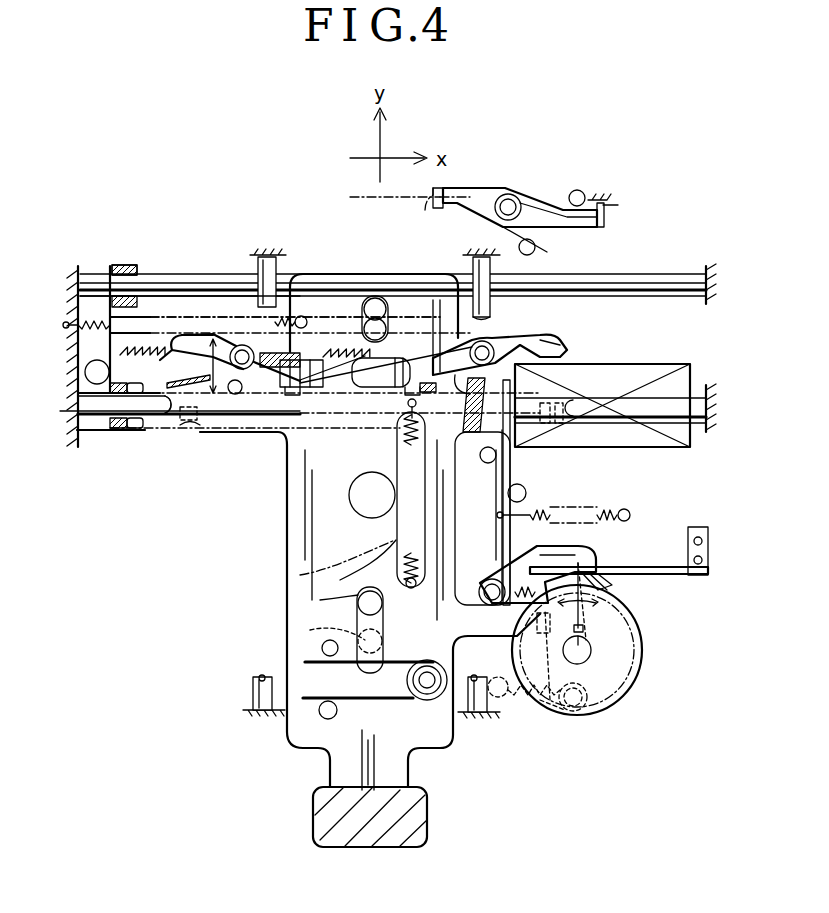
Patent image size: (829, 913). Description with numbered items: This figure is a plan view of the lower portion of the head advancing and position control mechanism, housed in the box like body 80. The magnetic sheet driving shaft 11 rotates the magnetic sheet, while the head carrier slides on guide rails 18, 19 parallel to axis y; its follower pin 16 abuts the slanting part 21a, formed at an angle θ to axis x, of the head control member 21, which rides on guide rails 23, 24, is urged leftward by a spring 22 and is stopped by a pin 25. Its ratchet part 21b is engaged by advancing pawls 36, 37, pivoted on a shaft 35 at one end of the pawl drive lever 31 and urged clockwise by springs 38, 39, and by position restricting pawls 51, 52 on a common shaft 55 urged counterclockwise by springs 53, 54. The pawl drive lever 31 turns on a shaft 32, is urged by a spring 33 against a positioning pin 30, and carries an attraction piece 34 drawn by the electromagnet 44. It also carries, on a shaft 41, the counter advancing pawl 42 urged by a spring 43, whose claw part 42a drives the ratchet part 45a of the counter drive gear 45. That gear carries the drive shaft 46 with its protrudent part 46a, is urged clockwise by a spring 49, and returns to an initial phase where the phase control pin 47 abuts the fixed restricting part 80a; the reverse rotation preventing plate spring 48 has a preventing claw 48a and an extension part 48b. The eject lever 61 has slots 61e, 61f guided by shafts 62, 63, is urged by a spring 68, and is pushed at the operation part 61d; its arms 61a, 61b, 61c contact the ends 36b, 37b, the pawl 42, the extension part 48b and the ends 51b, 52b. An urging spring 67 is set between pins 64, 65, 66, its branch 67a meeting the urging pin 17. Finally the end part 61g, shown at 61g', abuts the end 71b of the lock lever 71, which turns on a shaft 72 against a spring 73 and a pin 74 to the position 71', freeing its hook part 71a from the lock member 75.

The magnetic sheet driving shaft 11 is at (300, 575).
The follower pin 16 is at (382, 348).
The urging pin 17 is at (357, 643).
The guide rail 18 is at (258, 260).
The guide rail 19 is at (528, 252).
The head control member 21 is at (147, 343).
The slanting part 21a is at (350, 360).
The ratchet part 21b is at (125, 268).
The spring 22 is at (165, 325).
The guide rail 23 is at (185, 372).
The guide rail 24 is at (180, 286).
The pin 25 is at (85, 374).
The positioning pin 30 is at (548, 514).
The pawl drive lever 31 is at (520, 493).
The shaft 32 is at (494, 456).
The spring 33 is at (600, 510).
The attraction piece 34 is at (568, 392).
The shaft 35 is at (492, 343).
The advancing pawl 36 is at (400, 395).
The end of advancing pawl 36b is at (548, 354).
The advancing pawl 37 is at (353, 380).
The end of advancing pawl 37b is at (548, 348).
The spring 38 is at (350, 480).
The spring 39 is at (385, 430).
The shaft 41 is at (432, 750).
The counter advancing pawl 42 is at (594, 552).
The claw part 42a is at (618, 572).
The spring 43 is at (545, 547).
The electromagnet 44 is at (640, 448).
The counter drive gear 45 is at (620, 615).
The ratchet part 45a is at (555, 612).
The drive shaft 46 is at (590, 660).
The protrudent part 46a is at (593, 645).
The phase control pin 47 is at (585, 706).
The reverse rotation preventing plate spring 48 is at (688, 575).
The preventing claw 48a is at (612, 586).
The extension part 48b is at (540, 590).
The spring 49 is at (500, 697).
The position restricting pawl 51 is at (233, 394).
The end of position restricting pawl 51b is at (158, 408).
The position restricting pawl 52 is at (280, 412).
The end of position restricting pawl 52b is at (78, 418).
The spring 53 is at (280, 362).
The spring 54 is at (305, 365).
The common shaft 55 is at (235, 347).
The eject lever 61 is at (300, 565).
The arm 61a is at (585, 402).
The arm 61b is at (550, 700).
The arm 61c is at (186, 419).
The operation part 61d is at (428, 828).
The slot 61e is at (450, 342).
The slot 61f is at (310, 630).
The end part of eject lever 61g is at (459, 273).
The end part of eject lever in abutting position 61g' is at (450, 161).
The shaft 62 is at (376, 322).
The shaft 63 is at (320, 600).
The pin 64 is at (410, 690).
The pin 65 is at (322, 716).
The pin 66 is at (305, 662).
The urging spring 67 is at (400, 702).
The branch of urging spring 67a is at (303, 678).
The spring 68 is at (340, 580).
The lock lever 71 is at (473, 185).
The lock lever in turned position 71' is at (485, 170).
The hook part 71a is at (604, 222).
The end of lock lever 71b is at (455, 195).
The shaft 72 is at (535, 205).
The spring 73 is at (580, 192).
The pin 74 is at (605, 192).
The lock member 75 is at (620, 205).
The box like body 80 is at (78, 272).
The fixed restricting part 80a is at (550, 710).